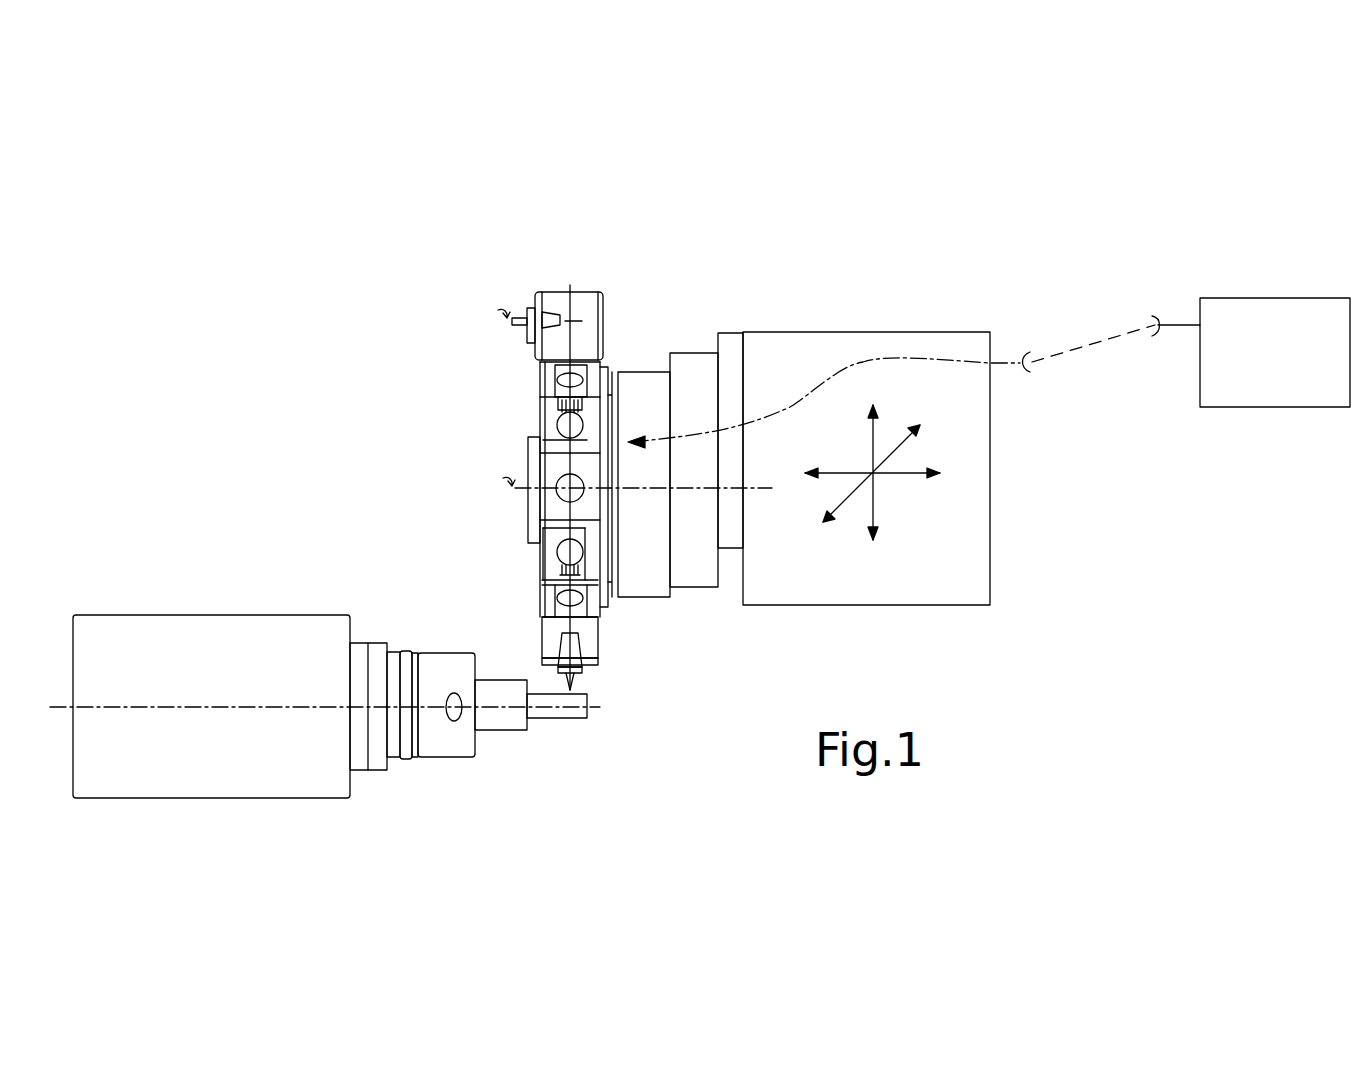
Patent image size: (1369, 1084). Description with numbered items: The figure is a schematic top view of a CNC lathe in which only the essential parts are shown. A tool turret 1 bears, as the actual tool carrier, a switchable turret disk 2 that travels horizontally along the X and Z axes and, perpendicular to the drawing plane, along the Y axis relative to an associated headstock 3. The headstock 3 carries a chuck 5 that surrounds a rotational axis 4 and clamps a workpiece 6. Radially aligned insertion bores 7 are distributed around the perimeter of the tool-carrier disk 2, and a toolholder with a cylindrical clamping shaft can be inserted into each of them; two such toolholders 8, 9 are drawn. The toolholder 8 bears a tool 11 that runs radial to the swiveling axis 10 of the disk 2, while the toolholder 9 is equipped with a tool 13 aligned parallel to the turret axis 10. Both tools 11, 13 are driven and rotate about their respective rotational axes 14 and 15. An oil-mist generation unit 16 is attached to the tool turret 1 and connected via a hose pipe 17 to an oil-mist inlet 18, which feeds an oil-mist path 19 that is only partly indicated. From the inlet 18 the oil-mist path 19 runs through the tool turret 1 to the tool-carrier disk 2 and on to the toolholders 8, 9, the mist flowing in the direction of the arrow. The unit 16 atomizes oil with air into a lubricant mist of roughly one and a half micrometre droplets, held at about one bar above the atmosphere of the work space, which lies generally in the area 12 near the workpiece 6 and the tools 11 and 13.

The tool turret 1 is at (790, 345).
The turret disk 2 is at (595, 387).
The headstock 3 is at (203, 635).
The rotational axis 4 is at (97, 705).
The chuck 5 is at (438, 748).
The workpiece 6 is at (558, 713).
The insertion bores 7 is at (563, 496).
The toolholder 8 is at (593, 637).
The toolholder 9 is at (570, 300).
The swiveling axis 10 is at (770, 488).
The tool 11 is at (578, 680).
The area 12 is at (386, 457).
The tool 13 is at (515, 305).
The rotational axis 14 is at (545, 597).
The rotational axis 15 is at (605, 298).
The oil-mist generation unit 16 is at (1240, 315).
The hose pipe 17 is at (1082, 340).
The oil-mist inlet 18 is at (1025, 350).
The oil-mist path 19 is at (865, 350).